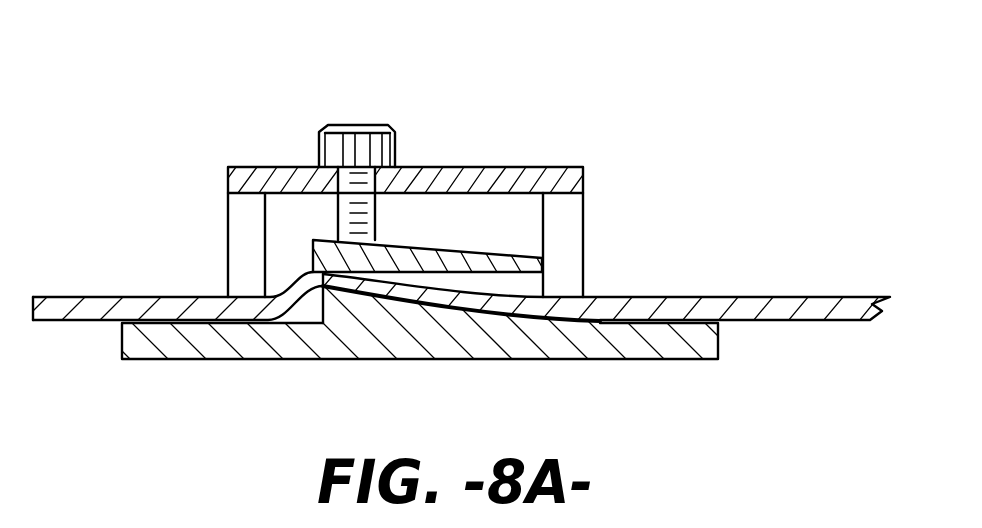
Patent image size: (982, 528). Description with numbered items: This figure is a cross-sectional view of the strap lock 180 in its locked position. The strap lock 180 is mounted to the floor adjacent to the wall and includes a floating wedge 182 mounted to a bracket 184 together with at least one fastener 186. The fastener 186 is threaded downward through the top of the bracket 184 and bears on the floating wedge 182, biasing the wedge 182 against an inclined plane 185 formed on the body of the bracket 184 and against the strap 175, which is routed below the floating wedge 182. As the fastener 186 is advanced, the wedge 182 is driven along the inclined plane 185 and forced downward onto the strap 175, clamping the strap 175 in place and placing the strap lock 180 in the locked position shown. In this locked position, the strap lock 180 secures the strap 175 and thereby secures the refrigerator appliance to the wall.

The strap lock 180 is at (610, 93).
The fastener 186 is at (360, 125).
The floating wedge 182 is at (412, 240).
The strap 175 is at (743, 296).
The bracket 184 is at (225, 361).
The inclined plane 185 is at (357, 293).